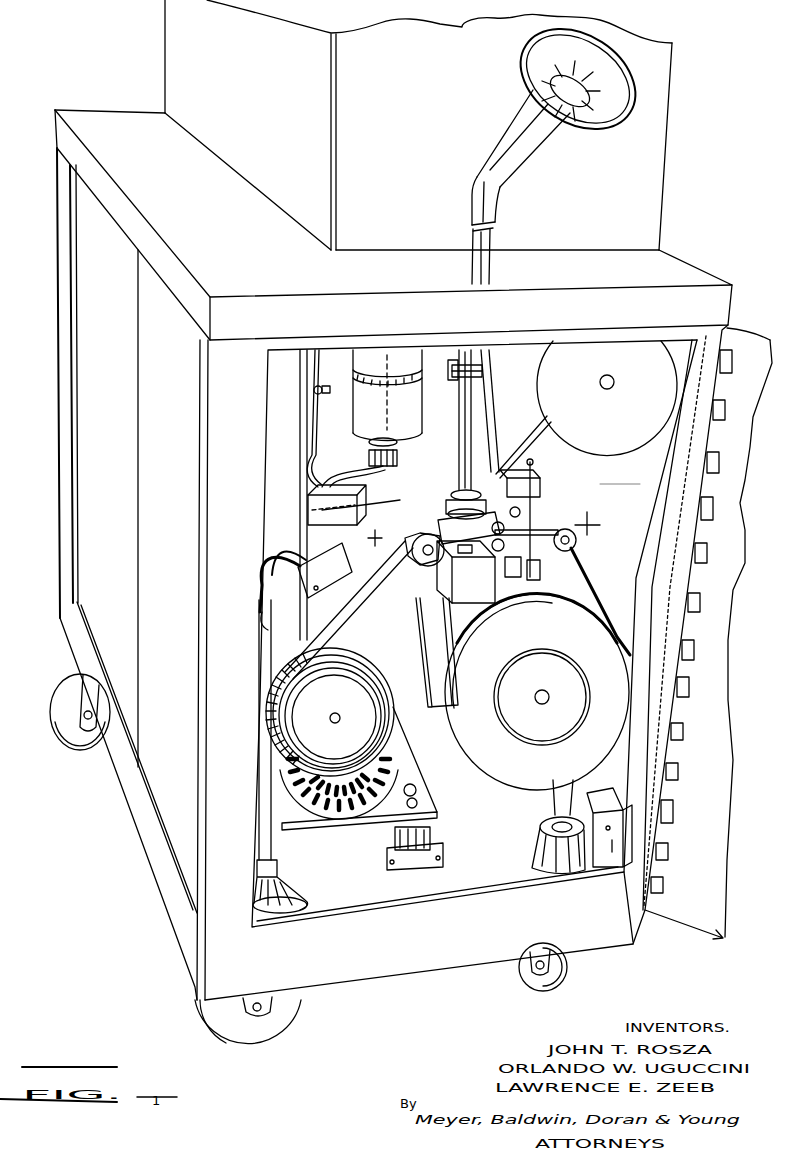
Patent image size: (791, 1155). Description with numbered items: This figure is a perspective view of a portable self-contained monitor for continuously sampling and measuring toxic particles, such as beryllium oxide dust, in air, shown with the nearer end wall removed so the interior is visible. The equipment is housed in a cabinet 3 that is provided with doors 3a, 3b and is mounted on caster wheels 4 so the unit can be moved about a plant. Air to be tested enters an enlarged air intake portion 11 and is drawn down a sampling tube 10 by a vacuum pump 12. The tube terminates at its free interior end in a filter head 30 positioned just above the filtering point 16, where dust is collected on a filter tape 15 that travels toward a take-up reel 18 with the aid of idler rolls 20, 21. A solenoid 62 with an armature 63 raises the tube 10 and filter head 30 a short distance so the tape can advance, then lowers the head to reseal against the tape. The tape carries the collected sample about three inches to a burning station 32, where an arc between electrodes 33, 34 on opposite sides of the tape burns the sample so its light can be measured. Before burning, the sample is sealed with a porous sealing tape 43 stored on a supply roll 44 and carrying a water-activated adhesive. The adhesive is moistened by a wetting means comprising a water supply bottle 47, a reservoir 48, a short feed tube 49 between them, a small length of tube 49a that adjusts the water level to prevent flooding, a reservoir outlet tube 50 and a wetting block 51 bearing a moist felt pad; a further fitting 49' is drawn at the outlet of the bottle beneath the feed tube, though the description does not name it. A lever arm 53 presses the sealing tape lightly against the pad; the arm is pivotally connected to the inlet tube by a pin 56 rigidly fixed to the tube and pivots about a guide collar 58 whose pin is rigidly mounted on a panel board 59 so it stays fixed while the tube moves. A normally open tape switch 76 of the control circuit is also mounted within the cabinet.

The cabinet 3 is at (57, 337).
The door 3a is at (724, 940).
The door 3b is at (80, 518).
The caster wheels 4 is at (77, 747).
The sampling tube 10 is at (494, 238).
The enlarged air intake portion 11 is at (618, 130).
The vacuum pump 12 is at (335, 825).
The filter tape 15 is at (352, 612).
The filtering point 16 is at (416, 538).
The take-up reel 18 is at (507, 780).
The idler roll 20 is at (424, 564).
The idler roll 21 is at (576, 541).
The filter head 30 is at (450, 492).
The burning station 32 is at (533, 527).
The electrode 33 is at (536, 466).
The electrode 34 is at (522, 578).
The sealing tape 43 is at (528, 429).
The supply roll 44 is at (607, 398).
The water supply bottle 47 is at (405, 433).
The reservoir 48 is at (376, 478).
The feed tube 49 is at (347, 505).
The tube 49a is at (368, 424).
The nozzle 49' is at (399, 452).
The reservoir outlet tube 50 is at (398, 518).
The wetting block 51 is at (457, 478).
The lever arm 53 is at (487, 418).
The pin 56 is at (456, 380).
The guide collar 58 is at (482, 376).
The panel board 59 is at (617, 476).
The solenoid 62 is at (495, 584).
The armature 63 is at (466, 572).
The tape switch 76 is at (317, 598).